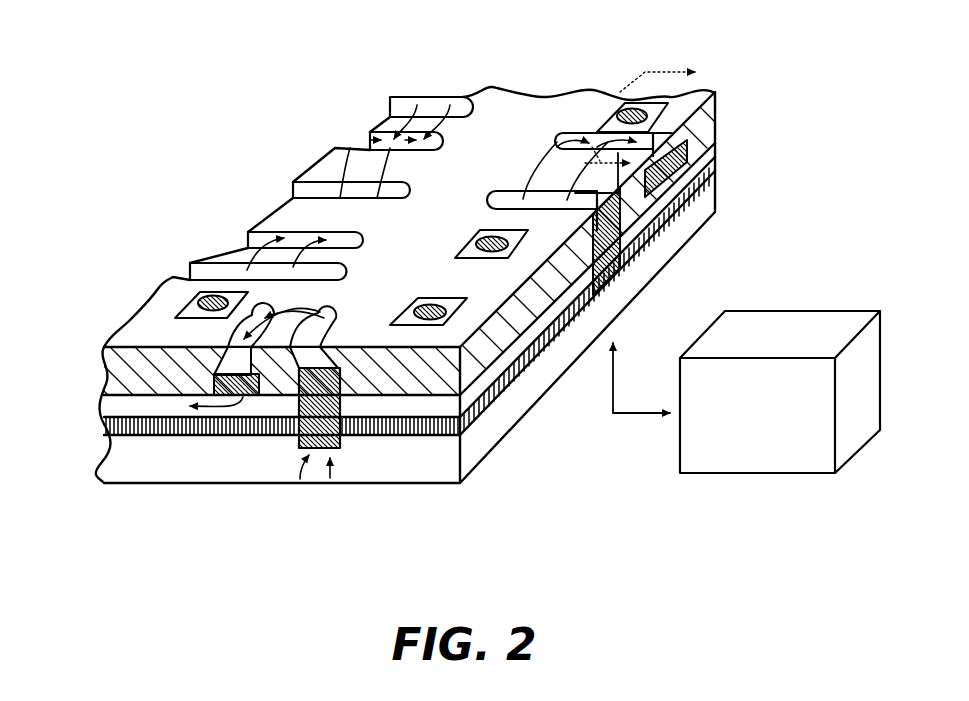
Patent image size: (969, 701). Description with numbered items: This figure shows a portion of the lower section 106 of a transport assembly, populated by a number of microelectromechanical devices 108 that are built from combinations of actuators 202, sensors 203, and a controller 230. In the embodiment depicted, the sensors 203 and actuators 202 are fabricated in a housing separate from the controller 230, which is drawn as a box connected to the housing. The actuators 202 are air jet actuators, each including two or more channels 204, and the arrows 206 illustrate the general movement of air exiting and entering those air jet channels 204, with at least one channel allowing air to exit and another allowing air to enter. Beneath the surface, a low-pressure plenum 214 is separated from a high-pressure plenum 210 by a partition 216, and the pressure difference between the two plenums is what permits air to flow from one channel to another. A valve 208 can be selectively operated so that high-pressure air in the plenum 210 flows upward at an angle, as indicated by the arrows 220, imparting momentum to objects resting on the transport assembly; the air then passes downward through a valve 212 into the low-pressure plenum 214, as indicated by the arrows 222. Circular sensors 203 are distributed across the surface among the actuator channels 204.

The microelectromechanical devices 108 is at (366, 58).
The lower section 106 is at (512, 115).
The actuators 202 is at (280, 171).
The sensors 203 is at (190, 316).
The air jet channels 204 is at (323, 317).
The arrows 206 is at (293, 310).
The valve 208 is at (303, 452).
The high-pressure plenum 210 is at (702, 200).
The valve 212 is at (250, 397).
The low-pressure plenum 214 is at (702, 152).
The partition 216 is at (118, 428).
The arrows 220 is at (333, 468).
The arrows 222 is at (208, 407).
The controller 230 is at (817, 318).